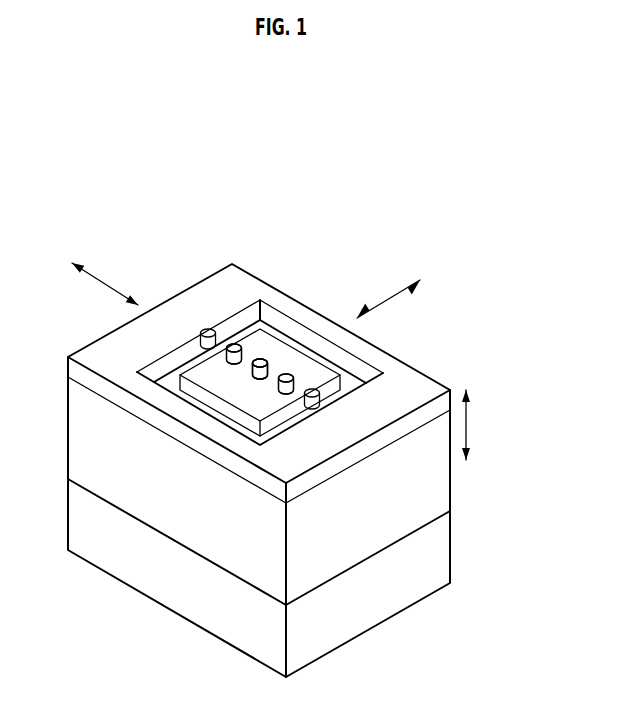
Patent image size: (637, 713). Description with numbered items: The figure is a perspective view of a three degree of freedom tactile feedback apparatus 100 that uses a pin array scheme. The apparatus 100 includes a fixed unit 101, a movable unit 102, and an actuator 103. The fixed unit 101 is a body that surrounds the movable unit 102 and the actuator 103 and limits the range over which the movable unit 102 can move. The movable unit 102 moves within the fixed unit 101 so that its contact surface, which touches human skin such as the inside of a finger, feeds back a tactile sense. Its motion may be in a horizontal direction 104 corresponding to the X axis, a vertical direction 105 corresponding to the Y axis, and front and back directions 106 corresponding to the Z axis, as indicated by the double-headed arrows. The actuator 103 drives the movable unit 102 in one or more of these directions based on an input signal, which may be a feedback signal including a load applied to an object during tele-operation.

The 3DOF tactile feedback apparatus 100 is at (288, 390).
The fixed unit 101 is at (426, 365).
The movable unit 102 is at (247, 336).
The actuator 103 is at (200, 356).
The horizontal direction 104 is at (105, 281).
The vertical direction 105 is at (468, 423).
The front and back directions 106 is at (391, 294).